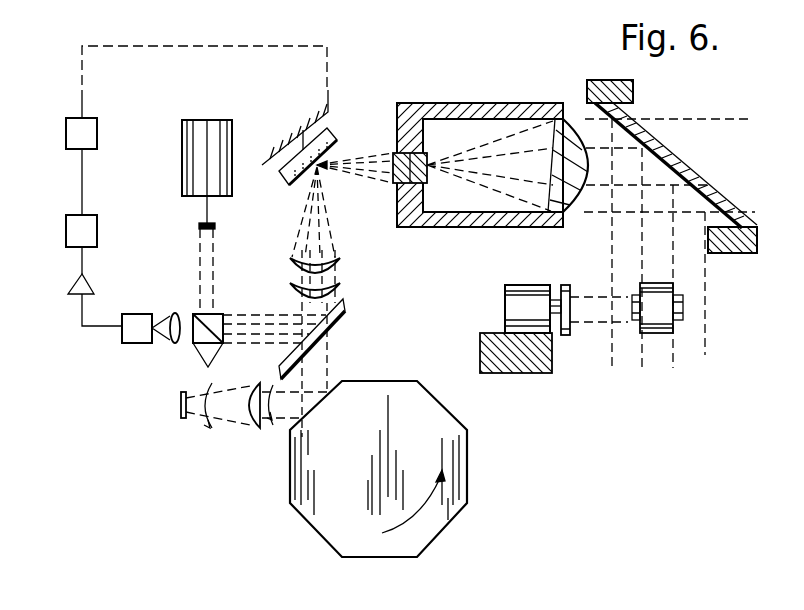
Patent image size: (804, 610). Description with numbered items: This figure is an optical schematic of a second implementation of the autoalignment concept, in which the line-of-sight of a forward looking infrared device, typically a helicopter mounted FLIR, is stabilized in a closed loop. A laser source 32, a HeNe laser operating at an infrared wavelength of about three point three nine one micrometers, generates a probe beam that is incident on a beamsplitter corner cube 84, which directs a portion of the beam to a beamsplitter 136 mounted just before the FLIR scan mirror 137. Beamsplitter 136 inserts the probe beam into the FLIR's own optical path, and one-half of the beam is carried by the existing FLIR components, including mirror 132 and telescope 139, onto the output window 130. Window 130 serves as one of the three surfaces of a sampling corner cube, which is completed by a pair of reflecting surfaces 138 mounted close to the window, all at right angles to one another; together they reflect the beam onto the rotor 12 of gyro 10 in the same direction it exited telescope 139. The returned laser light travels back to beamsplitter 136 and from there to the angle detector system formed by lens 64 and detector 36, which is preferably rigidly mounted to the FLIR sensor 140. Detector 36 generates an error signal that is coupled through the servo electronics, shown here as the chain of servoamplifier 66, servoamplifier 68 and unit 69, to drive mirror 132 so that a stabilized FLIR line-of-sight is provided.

The control unit 69 is at (66, 121).
The servoamplifier 68 is at (66, 217).
The servoamplifier 66 is at (70, 290).
The detector 36 is at (122, 343).
The lens 64 is at (175, 343).
The beamsplitter corner cube 84 is at (222, 314).
The laser source 32 is at (183, 120).
The mirror 132 is at (331, 123).
The telescope 139 is at (397, 228).
The gyro 10 is at (527, 280).
The gyro rotor 12 is at (570, 285).
The output window 130 is at (705, 187).
The reflecting surfaces 138 is at (671, 335).
The beamsplitter 136 is at (346, 320).
The FLIR sensor 140 is at (183, 418).
The FLIR scan mirror 137 is at (467, 430).